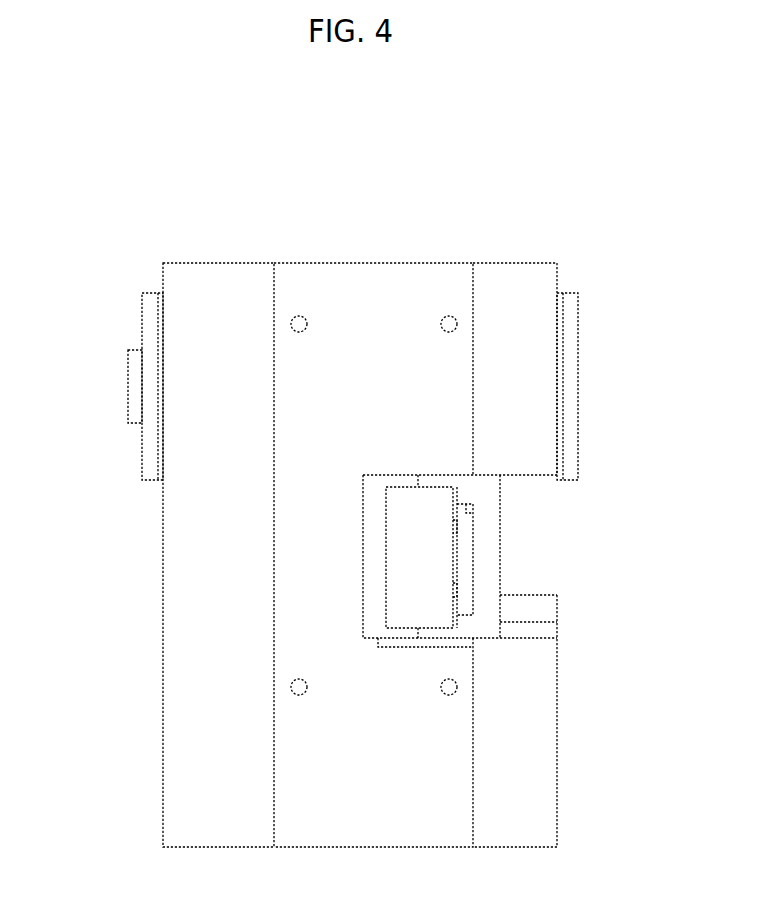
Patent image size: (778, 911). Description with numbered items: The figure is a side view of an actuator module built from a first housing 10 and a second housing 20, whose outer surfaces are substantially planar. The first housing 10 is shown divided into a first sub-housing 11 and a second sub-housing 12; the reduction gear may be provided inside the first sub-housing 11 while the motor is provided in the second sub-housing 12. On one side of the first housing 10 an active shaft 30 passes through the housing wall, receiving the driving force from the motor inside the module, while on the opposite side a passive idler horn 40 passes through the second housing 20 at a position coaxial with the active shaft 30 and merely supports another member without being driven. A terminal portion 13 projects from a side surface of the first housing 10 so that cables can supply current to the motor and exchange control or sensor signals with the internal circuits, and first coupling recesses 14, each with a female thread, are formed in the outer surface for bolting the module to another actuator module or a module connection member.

The first housing 10 is at (318, 481).
The first sub-housing 11 is at (245, 275).
The second sub-housing 12 is at (315, 280).
The terminal portion 13 is at (368, 572).
The first coupling recess 14 is at (296, 687).
The second housing 20 is at (507, 280).
The active shaft 30 is at (148, 318).
The passive idler horn 40 is at (573, 355).